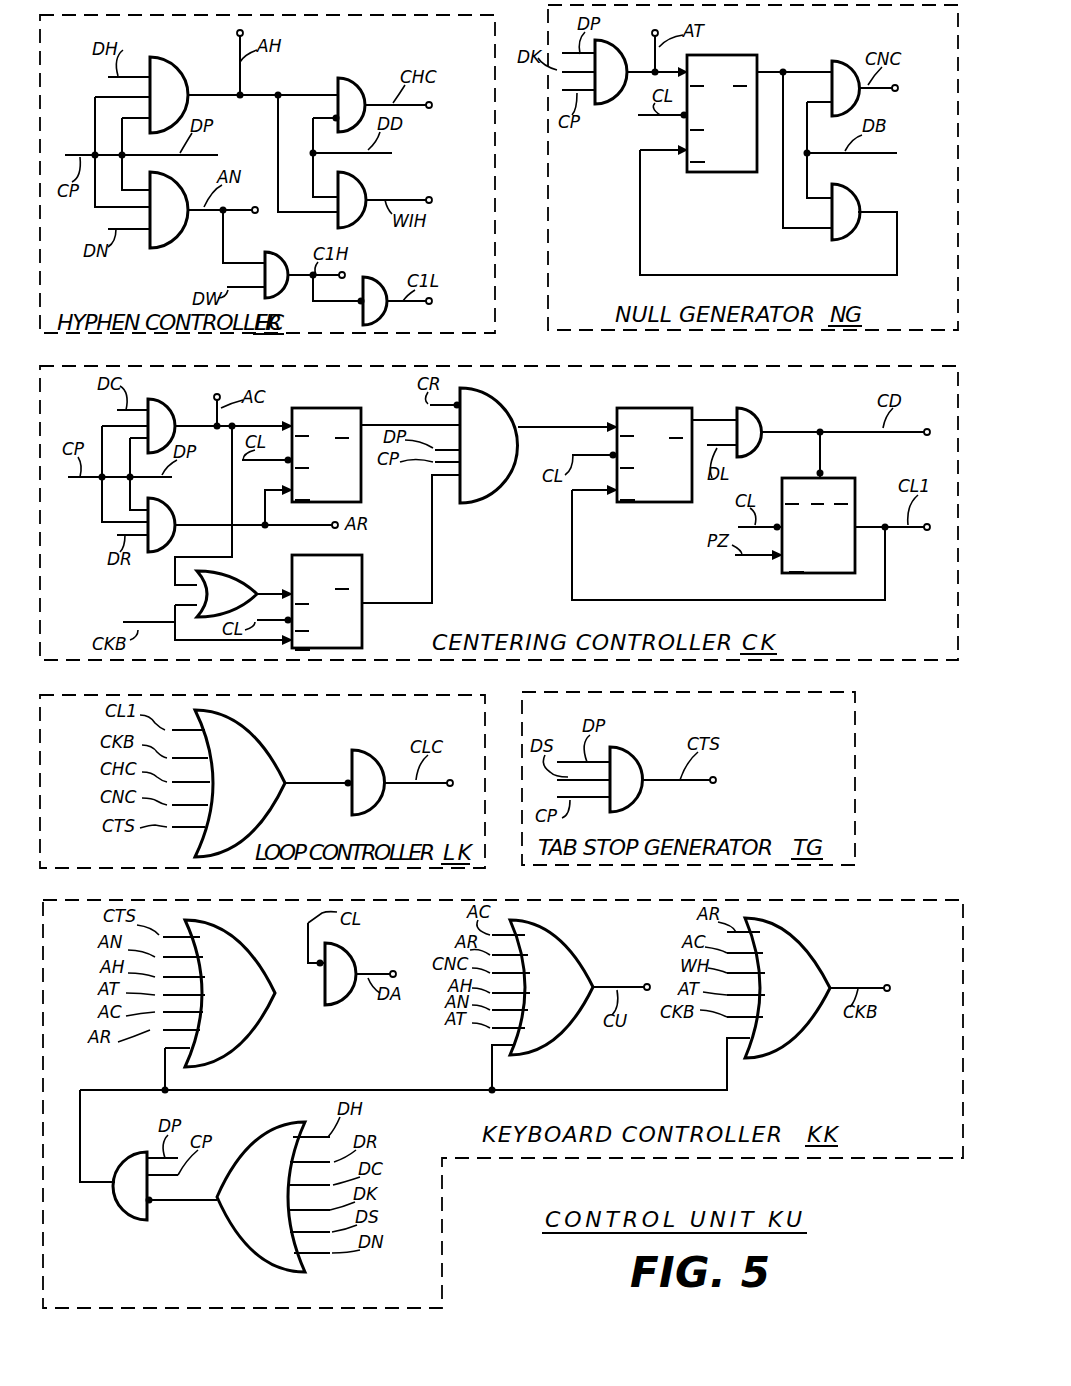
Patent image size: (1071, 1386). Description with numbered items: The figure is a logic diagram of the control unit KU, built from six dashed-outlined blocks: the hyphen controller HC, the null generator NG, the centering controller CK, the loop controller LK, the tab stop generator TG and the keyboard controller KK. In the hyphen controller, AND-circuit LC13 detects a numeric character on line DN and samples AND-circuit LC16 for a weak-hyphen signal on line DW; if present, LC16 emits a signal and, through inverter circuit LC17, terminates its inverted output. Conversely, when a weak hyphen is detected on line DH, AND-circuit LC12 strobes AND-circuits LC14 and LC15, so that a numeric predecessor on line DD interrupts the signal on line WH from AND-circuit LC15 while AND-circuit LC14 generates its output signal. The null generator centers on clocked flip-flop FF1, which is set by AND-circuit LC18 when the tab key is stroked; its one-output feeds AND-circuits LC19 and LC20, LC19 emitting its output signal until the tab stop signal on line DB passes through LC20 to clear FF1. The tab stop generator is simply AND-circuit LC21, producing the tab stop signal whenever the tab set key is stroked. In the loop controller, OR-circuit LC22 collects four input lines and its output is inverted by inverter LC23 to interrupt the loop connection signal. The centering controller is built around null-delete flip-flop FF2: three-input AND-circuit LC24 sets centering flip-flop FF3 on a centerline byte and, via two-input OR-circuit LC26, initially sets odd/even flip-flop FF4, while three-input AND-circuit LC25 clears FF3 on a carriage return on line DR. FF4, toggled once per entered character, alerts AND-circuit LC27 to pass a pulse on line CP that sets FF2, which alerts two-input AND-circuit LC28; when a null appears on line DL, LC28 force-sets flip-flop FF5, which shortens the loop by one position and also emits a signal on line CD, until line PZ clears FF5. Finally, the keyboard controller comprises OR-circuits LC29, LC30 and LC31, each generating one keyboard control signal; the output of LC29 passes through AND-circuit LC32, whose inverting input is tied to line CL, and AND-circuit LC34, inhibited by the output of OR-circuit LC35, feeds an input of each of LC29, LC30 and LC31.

The AND-circuit LC12 is at (178, 45).
The AND-circuit LC13 is at (160, 248).
The AND-circuit LC14 is at (350, 76).
The AND-circuit LC15 is at (363, 224).
The AND-circuit LC16 is at (285, 246).
The inverter circuit LC17 is at (390, 316).
The AND-circuit LC18 is at (608, 104).
The AND-circuit LC19 is at (825, 60).
The AND-circuit LC20 is at (847, 197).
The clocked flip-flop FF1 is at (715, 172).
The three-input AND-circuit LC24 is at (175, 390).
The three-input AND-circuit LC25 is at (185, 497).
The two-input OR-circuit LC26 is at (227, 576).
The AND-circuit LC27 is at (508, 410).
The two-input AND-circuit LC28 is at (770, 398).
The null delete flip-flop FF2 is at (650, 508).
The centering flip-flop FF3 is at (322, 408).
The odd/even flip-flop FF4 is at (360, 555).
The flip-flop FF5 is at (798, 476).
The OR-circuit LC22 is at (290, 725).
The inverter LC23 is at (387, 802).
The AND-circuit LC21 is at (643, 800).
The OR-circuit LC29 is at (247, 1022).
The OR-circuit LC30 is at (575, 957).
The OR-circuit LC31 is at (788, 947).
The AND-circuit LC32 is at (355, 946).
The AND-circuit LC34 is at (120, 1210).
The OR-circuit LC35 is at (237, 1134).